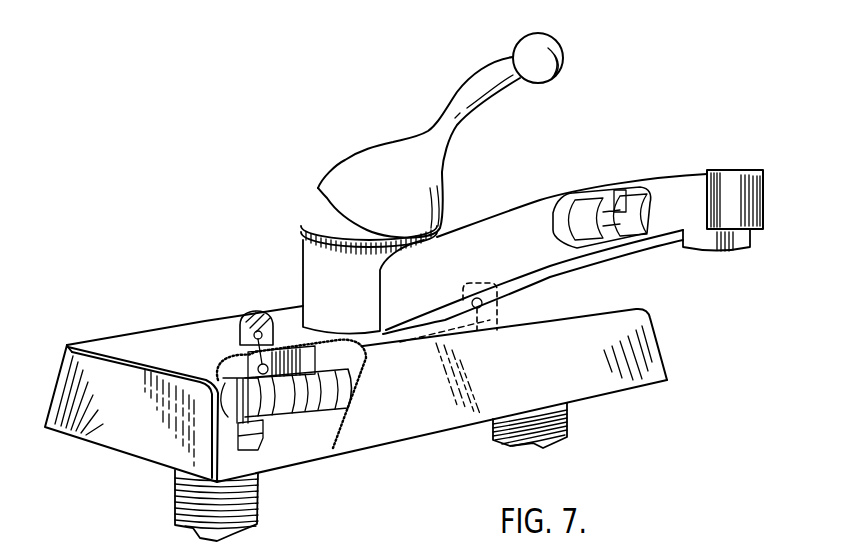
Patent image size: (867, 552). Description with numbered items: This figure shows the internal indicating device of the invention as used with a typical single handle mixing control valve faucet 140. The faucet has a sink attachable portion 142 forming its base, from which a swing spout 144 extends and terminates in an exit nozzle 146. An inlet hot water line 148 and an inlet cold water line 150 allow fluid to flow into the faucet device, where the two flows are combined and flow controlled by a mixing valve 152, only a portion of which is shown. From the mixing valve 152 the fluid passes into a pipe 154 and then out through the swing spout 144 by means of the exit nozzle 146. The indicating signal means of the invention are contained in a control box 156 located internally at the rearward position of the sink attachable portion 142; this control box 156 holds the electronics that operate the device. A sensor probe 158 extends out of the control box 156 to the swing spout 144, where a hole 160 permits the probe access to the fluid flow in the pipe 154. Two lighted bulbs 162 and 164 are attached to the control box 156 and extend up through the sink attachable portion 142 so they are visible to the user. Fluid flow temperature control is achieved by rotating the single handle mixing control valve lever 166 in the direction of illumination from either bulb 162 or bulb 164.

The single handle mixing control valve faucet 140 is at (95, 448).
The sink attachable portion 142 is at (112, 345).
The swing spout 144 is at (693, 180).
The exit nozzle 146 is at (707, 249).
The inlet hot water line 148 is at (258, 520).
The inlet cold water line 150 is at (567, 425).
The mixing valve 152 is at (343, 387).
The pipe 154 is at (553, 230).
The control box 156 is at (310, 360).
The sensor probe 158 is at (637, 212).
The hole 160 is at (615, 208).
The lighted bulb 162 is at (248, 320).
The lighted bulb 164 is at (497, 302).
The single handle mixing control valve lever 166 is at (422, 133).